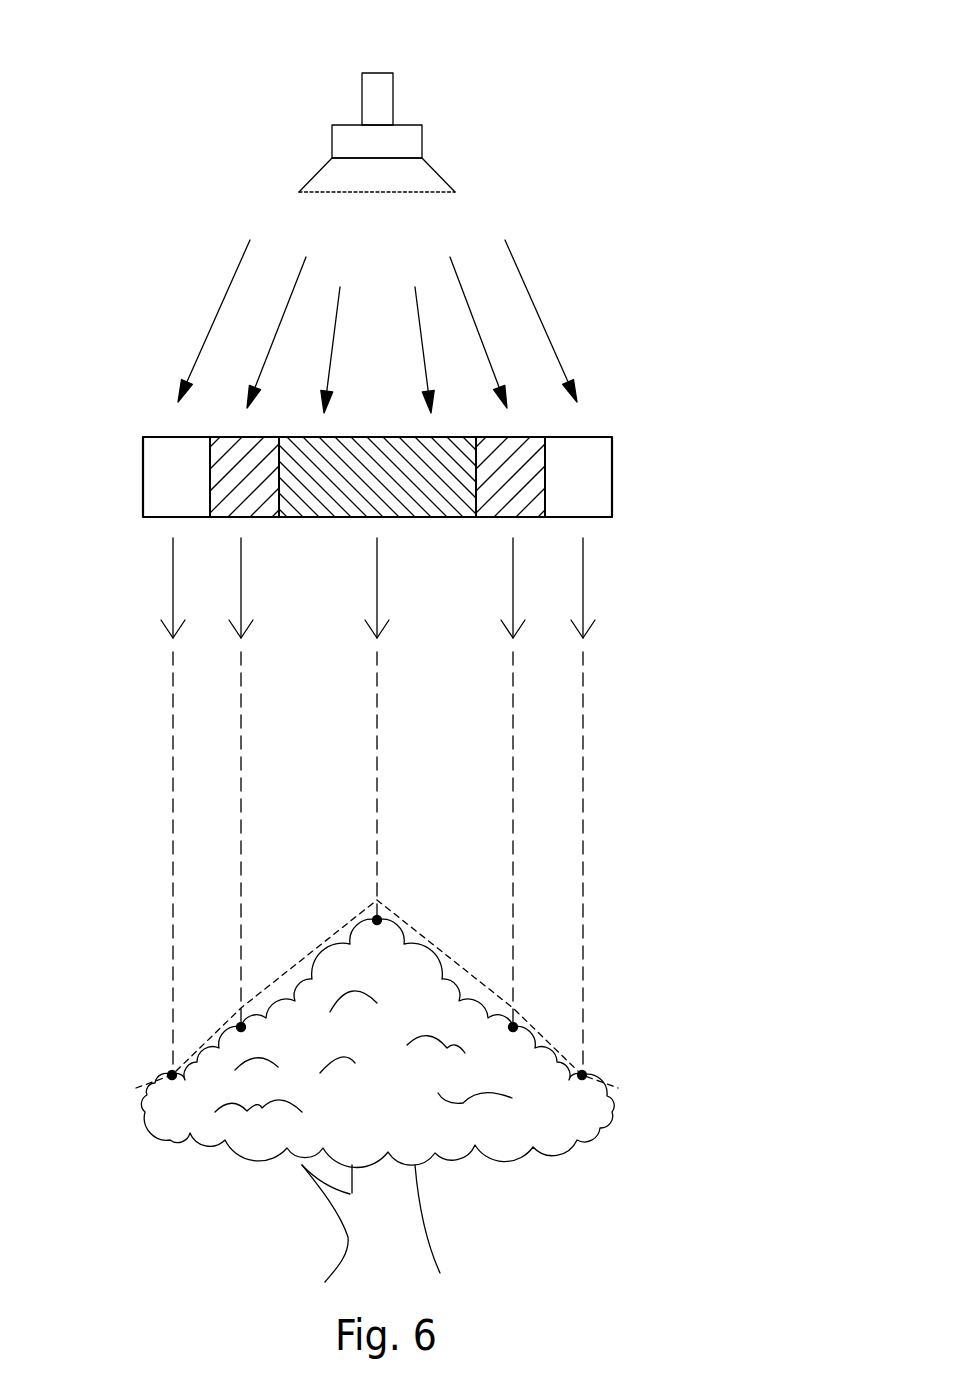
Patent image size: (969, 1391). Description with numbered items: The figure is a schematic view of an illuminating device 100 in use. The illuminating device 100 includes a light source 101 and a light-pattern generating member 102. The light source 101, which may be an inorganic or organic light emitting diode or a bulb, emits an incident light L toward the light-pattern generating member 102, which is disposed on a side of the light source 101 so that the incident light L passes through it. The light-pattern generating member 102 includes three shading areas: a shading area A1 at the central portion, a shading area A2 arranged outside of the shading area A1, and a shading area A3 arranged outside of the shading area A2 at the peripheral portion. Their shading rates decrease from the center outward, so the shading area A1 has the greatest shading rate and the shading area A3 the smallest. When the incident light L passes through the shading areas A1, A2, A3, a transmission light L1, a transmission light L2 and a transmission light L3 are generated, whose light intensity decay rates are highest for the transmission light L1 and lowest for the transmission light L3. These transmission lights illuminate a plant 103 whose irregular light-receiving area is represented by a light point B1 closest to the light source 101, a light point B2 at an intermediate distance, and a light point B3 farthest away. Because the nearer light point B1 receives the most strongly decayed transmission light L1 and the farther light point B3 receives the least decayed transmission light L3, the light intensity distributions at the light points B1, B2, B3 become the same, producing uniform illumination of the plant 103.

The illuminating device 100 is at (145, 117).
The light source 101 is at (422, 172).
The light-pattern generating member 102 is at (632, 452).
The plant 103 is at (410, 1192).
The incident light L is at (543, 318).
The transmission light L1 is at (377, 604).
The transmission light L2 is at (242, 604).
The transmission light L3 is at (172, 590).
The shading area A1 is at (335, 500).
The shading area A2 is at (238, 500).
The shading area A3 is at (167, 500).
The light point B1 is at (377, 920).
The light point B2 is at (241, 1027).
The light point B3 is at (172, 1075).